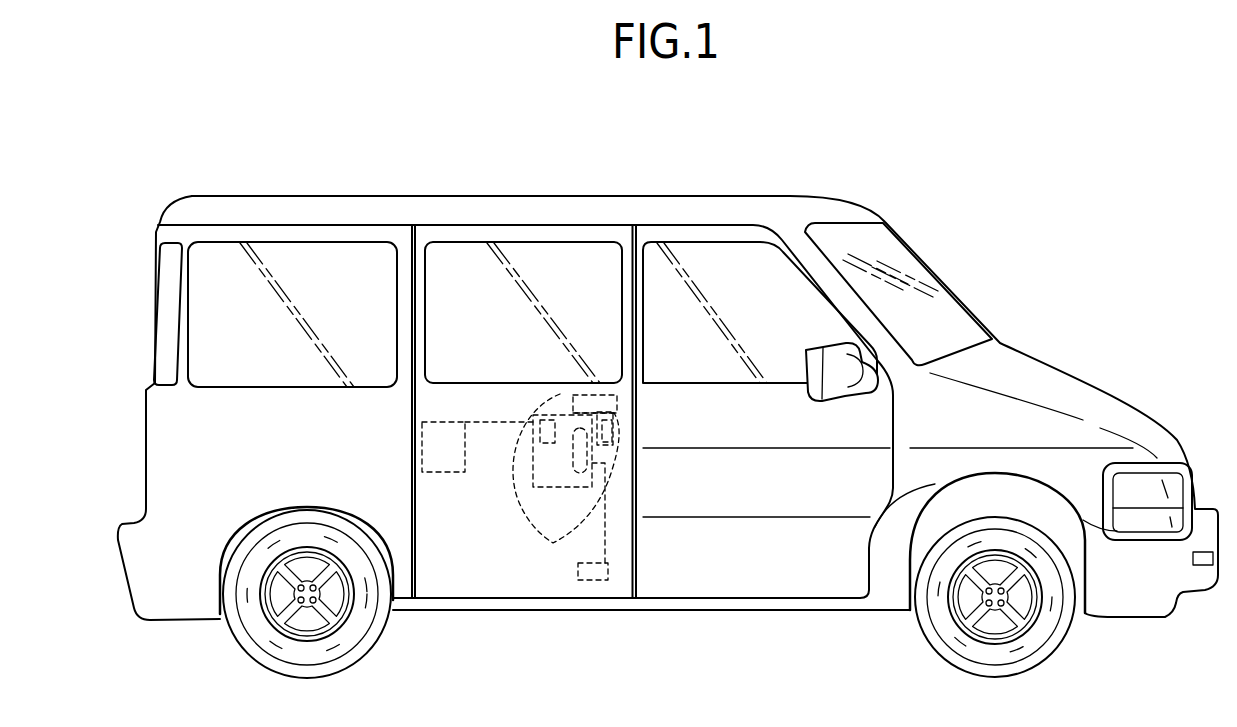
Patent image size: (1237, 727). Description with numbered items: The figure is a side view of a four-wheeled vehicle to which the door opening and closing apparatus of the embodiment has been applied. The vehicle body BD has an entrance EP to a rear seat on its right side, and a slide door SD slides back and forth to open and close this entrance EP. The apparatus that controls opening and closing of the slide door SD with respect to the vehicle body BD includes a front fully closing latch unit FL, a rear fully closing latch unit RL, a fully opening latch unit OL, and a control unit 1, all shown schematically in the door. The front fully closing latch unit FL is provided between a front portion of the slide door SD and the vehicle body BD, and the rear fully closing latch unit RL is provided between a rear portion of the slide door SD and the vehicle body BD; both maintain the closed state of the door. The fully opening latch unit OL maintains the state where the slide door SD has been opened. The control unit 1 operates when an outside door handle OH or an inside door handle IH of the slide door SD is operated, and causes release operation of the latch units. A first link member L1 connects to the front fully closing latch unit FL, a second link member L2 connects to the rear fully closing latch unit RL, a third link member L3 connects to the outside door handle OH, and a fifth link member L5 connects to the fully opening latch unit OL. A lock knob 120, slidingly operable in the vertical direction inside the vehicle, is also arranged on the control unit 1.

The vehicle body BD is at (194, 210).
The entrance EP is at (425, 231).
The control unit 1 is at (545, 413).
The lock knob 120 is at (563, 413).
The outside door handle OH is at (594, 395).
The first link member L1 is at (617, 410).
The front fully closing latch unit FL is at (614, 428).
The fifth link member L5 is at (606, 543).
The second link member L2 is at (498, 423).
The rear fully closing latch unit RL is at (443, 472).
The slide door SD is at (488, 577).
The third link member L3 is at (545, 540).
The inside door handle IH is at (585, 478).
The fully opening latch unit OL is at (592, 580).